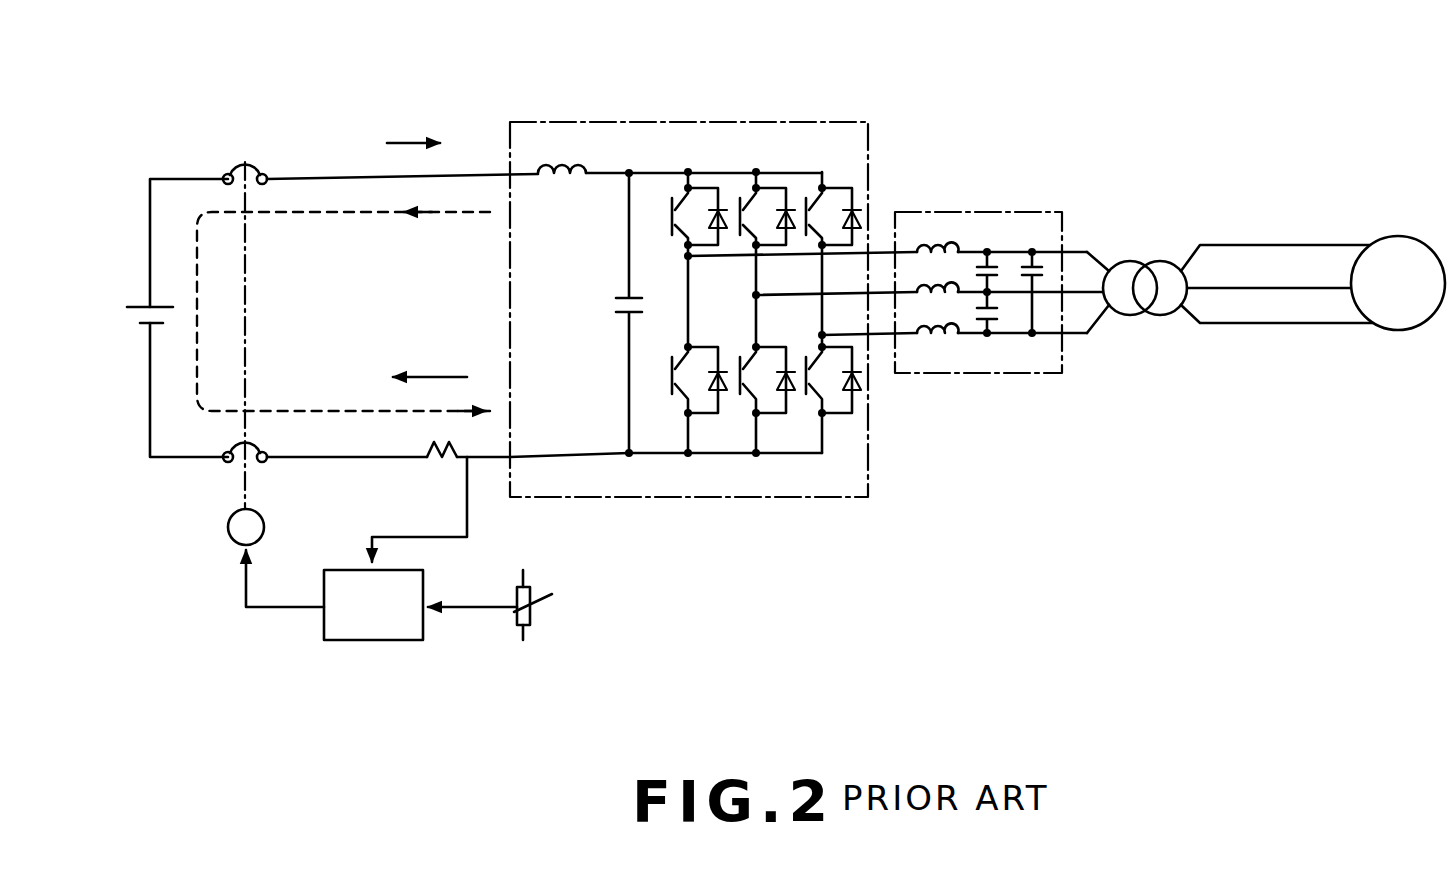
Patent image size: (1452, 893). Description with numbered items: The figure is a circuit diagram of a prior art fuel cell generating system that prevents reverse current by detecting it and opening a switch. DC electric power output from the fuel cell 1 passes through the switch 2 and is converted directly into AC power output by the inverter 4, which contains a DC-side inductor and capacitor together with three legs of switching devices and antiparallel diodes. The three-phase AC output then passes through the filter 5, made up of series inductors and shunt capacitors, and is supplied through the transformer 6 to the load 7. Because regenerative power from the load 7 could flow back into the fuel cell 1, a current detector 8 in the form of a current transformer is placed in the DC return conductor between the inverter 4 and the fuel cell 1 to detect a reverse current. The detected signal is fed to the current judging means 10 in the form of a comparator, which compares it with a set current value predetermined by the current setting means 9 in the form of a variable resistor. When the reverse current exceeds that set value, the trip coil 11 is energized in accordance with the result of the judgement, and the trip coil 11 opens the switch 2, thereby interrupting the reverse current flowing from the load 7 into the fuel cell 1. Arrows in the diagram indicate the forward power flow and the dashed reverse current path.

The fuel cell 1 is at (132, 322).
The switch 2 is at (245, 161).
The inverter 4 is at (703, 120).
The filter 5 is at (985, 374).
The transformer 6 is at (1130, 261).
The load 7 is at (1383, 331).
The current detector 8 is at (462, 449).
The current setting means 9 is at (535, 624).
The current judging means 10 is at (360, 641).
The trip coil 11 is at (232, 540).